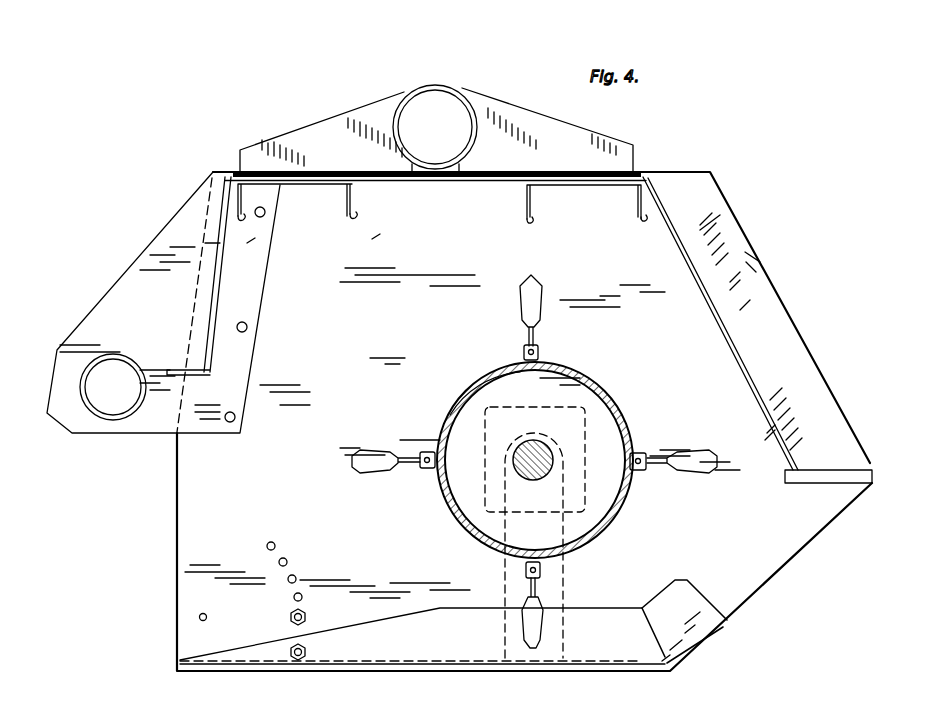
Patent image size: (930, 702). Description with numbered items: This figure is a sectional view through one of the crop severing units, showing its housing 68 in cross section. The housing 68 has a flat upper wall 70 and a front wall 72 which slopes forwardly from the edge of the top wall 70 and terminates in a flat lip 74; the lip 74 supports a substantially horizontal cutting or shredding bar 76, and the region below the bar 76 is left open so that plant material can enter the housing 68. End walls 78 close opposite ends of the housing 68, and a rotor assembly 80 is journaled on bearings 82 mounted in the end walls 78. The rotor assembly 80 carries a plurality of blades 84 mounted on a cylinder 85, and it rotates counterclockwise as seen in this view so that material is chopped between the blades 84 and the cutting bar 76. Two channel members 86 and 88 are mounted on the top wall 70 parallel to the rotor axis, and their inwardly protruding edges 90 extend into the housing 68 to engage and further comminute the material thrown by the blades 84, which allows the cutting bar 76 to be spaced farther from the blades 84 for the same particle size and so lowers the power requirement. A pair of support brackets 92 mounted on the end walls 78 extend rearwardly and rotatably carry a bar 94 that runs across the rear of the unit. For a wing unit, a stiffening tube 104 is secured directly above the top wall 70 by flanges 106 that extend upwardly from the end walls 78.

The housing 68 is at (643, 173).
The flat upper wall 70 is at (392, 182).
The front wall 72 is at (710, 314).
The flat lip 74 is at (827, 468).
The cutting or shredding bar 76 is at (833, 484).
The end walls 78 is at (437, 302).
The rotor assembly 80 is at (626, 414).
The bearings 82 is at (568, 402).
The blades 84 is at (536, 304).
The cylinder 85 is at (475, 384).
The channel member 86 is at (305, 186).
The channel member 88 is at (595, 188).
The inwardly protruding edges 90 is at (247, 221).
The support brackets 92 is at (137, 277).
The bar 94 is at (87, 363).
The stiffening tube 104 is at (404, 100).
The flanges 106 is at (315, 130).